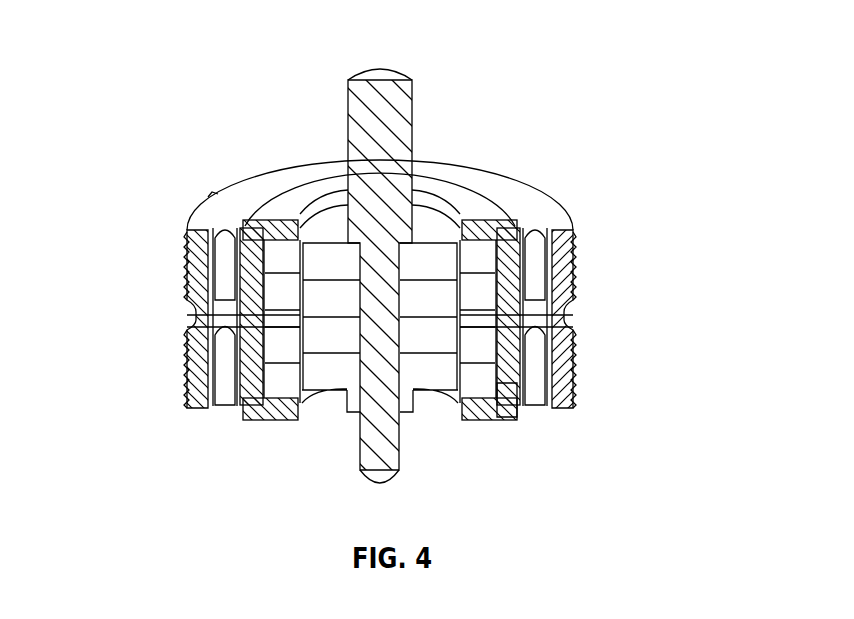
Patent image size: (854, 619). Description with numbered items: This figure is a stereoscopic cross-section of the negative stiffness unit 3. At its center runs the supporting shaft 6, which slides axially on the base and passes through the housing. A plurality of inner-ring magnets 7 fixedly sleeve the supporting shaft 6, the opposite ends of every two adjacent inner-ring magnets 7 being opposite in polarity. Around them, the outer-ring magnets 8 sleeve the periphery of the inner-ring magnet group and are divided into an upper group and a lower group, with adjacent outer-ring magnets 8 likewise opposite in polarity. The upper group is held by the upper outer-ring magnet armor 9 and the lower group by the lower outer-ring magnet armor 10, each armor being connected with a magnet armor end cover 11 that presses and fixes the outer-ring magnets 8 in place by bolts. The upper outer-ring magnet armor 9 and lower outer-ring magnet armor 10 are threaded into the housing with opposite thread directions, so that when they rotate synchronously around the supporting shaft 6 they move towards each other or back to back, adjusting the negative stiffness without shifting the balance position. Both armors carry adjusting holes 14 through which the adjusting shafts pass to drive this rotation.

The negative stiffness unit 3 is at (158, 170).
The supporting shaft 6 is at (382, 130).
The inner-ring magnets 7 is at (510, 330).
The outer-ring magnets 8 is at (480, 288).
The upper outer-ring magnet armor 9 is at (505, 262).
The lower outer-ring magnet armor 10 is at (440, 337).
The magnet armor end cover 11 is at (475, 215).
The adjusting holes 14 is at (212, 275).